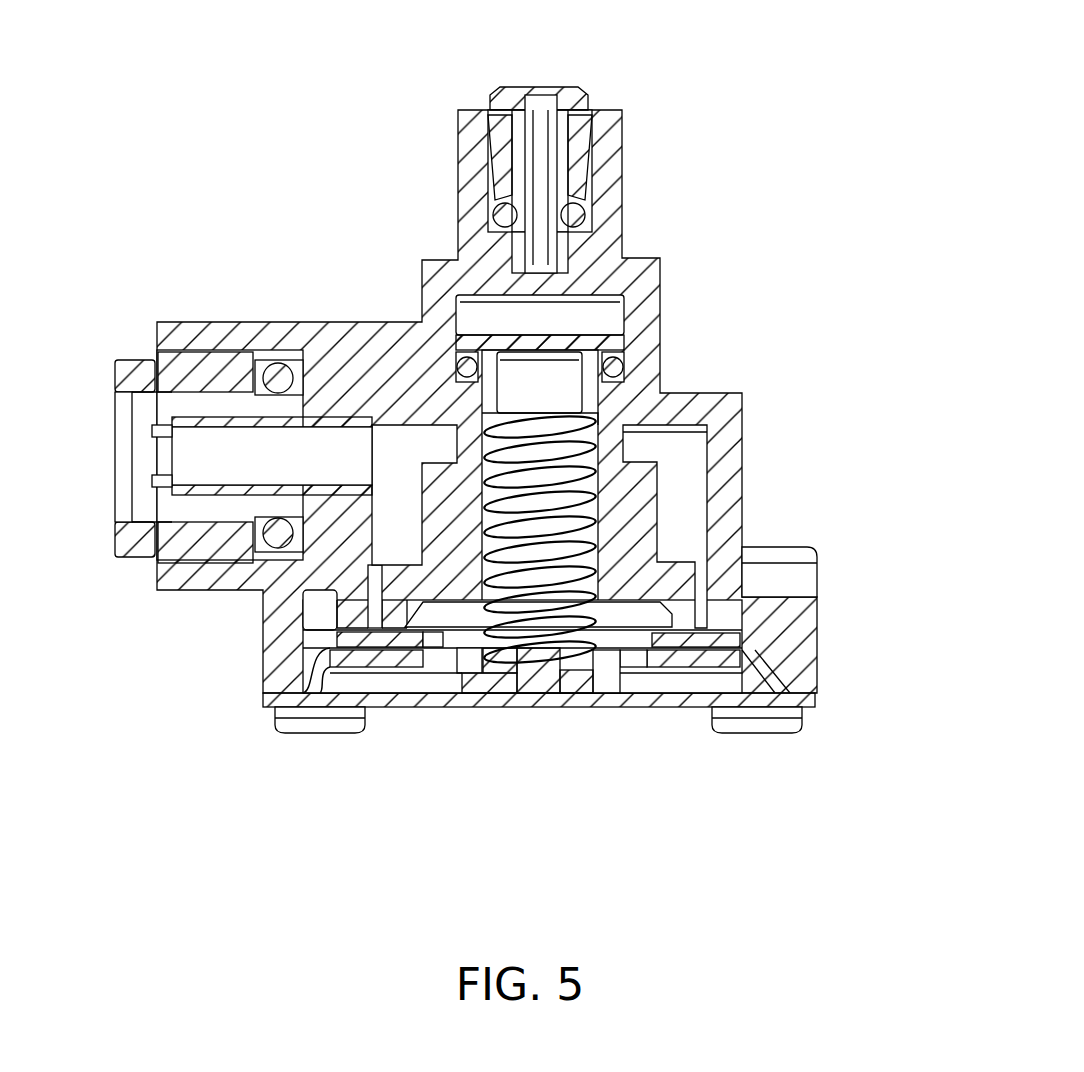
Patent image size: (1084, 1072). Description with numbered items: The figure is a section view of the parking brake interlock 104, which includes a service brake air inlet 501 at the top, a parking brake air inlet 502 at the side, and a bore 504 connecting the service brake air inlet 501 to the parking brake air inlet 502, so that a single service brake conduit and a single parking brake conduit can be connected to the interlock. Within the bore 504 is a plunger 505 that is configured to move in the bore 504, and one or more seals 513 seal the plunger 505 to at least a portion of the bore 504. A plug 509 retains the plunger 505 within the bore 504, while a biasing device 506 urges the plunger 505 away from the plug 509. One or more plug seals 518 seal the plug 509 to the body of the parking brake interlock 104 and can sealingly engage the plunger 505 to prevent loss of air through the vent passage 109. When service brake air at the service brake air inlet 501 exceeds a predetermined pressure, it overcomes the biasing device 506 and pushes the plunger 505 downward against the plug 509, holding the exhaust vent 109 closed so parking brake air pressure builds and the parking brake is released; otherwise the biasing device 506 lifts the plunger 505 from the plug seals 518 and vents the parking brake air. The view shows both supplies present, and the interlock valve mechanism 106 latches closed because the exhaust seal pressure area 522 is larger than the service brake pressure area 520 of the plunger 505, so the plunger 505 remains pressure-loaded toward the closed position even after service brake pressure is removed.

The parking brake interlock 104 is at (218, 818).
The interlock valve mechanism 106 is at (327, 785).
The vent passage 109 is at (476, 673).
The service brake air inlet 501 is at (557, 88).
The parking brake air inlet 502 is at (140, 412).
The bore 504 is at (618, 318).
The plunger 505 is at (660, 470).
The biasing device 506 is at (590, 525).
The plug 509 is at (818, 700).
The seals 513 is at (628, 366).
The plug seals 518 is at (800, 645).
The service brake pressure area 520 is at (487, 330).
The exhaust seal pressure area 522 is at (455, 460).